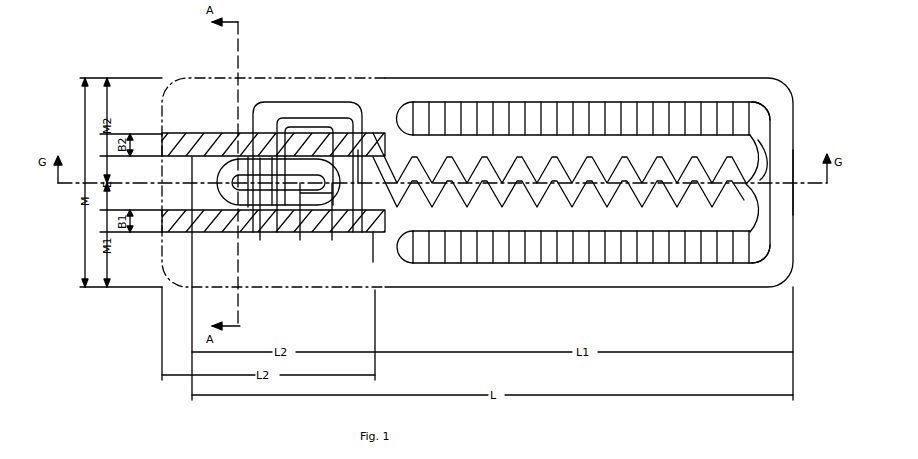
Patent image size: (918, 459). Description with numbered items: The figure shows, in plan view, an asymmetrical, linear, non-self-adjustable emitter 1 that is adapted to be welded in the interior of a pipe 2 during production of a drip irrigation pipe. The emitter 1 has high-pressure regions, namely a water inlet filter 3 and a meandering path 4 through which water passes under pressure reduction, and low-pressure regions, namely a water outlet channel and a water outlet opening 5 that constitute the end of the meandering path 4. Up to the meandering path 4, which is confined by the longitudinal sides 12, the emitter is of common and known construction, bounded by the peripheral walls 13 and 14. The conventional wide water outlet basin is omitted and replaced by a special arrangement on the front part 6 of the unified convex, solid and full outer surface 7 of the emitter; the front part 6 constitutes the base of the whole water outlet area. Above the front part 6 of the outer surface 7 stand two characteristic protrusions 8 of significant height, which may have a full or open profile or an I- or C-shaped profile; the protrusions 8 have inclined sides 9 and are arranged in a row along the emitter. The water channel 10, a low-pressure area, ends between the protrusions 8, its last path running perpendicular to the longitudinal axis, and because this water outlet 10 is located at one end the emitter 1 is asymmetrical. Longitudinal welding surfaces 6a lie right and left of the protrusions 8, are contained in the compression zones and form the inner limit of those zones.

The emitter 1 is at (418, 78).
The pipe 2 is at (505, 100).
The water inlet filter 3 is at (437, 115).
The meandering path 4 is at (725, 175).
The water outlet opening 5 is at (277, 118).
The front part 6 is at (360, 133).
The longitudinal welding surfaces 6a is at (213, 132).
The outer surface 7 is at (373, 240).
The protrusions 8 is at (253, 102).
The inclined sides 9 is at (332, 235).
The water channel 10 is at (362, 128).
The longitudinal sides 12 is at (675, 150).
The peripheral wall 13 is at (765, 95).
The peripheral wall 14 is at (789, 186).